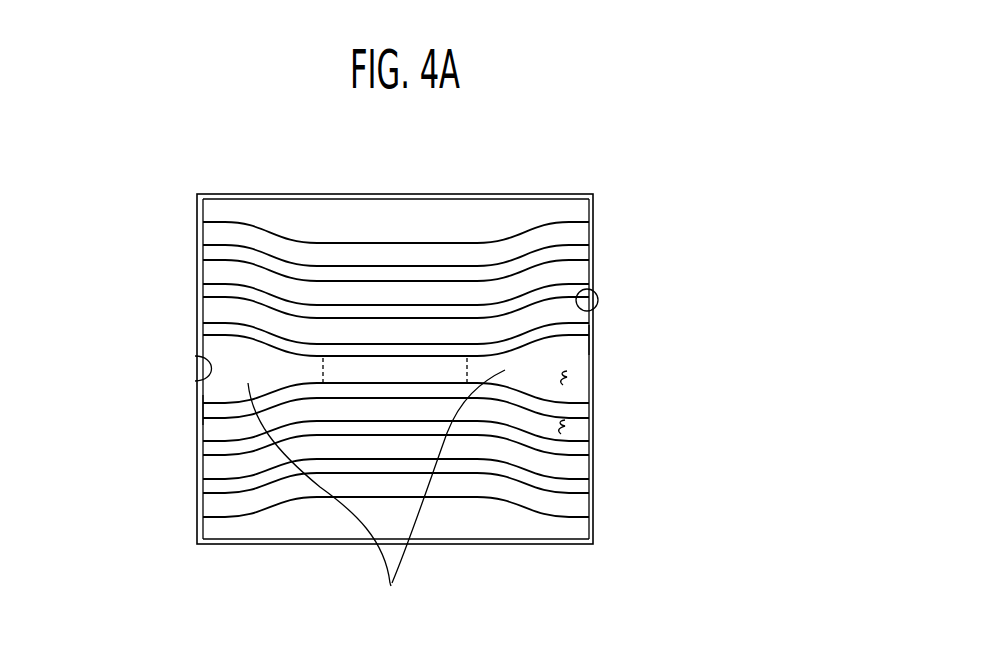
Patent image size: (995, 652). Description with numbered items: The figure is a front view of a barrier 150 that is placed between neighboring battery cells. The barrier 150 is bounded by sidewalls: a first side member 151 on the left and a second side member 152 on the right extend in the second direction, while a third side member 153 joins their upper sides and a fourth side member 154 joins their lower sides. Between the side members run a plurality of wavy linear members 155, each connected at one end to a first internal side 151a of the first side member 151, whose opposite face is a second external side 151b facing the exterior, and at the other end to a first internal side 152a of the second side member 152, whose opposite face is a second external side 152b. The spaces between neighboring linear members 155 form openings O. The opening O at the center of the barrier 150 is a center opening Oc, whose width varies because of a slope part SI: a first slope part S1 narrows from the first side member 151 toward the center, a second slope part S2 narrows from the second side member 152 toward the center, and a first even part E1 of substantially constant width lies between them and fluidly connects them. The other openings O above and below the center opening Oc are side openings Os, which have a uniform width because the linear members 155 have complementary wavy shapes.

The barrier 150 is at (565, 152).
The first side member 151 is at (73, 348).
The first internal side 151a is at (196, 358).
The second external side 151b is at (200, 410).
The second side member 152 is at (712, 285).
The first internal side 152a is at (597, 291).
The second external side 152b is at (592, 340).
The third side member 153 is at (453, 197).
The fourth side member 154 is at (453, 545).
The linear member 155 is at (318, 305).
The first even part E1 is at (395, 370).
The first slope part S1 is at (313, 469).
The second slope part S2 is at (462, 469).
The slope part SI is at (391, 603).
The opening O is at (665, 425).
The center opening Oc is at (567, 378).
The side opening Os is at (563, 428).